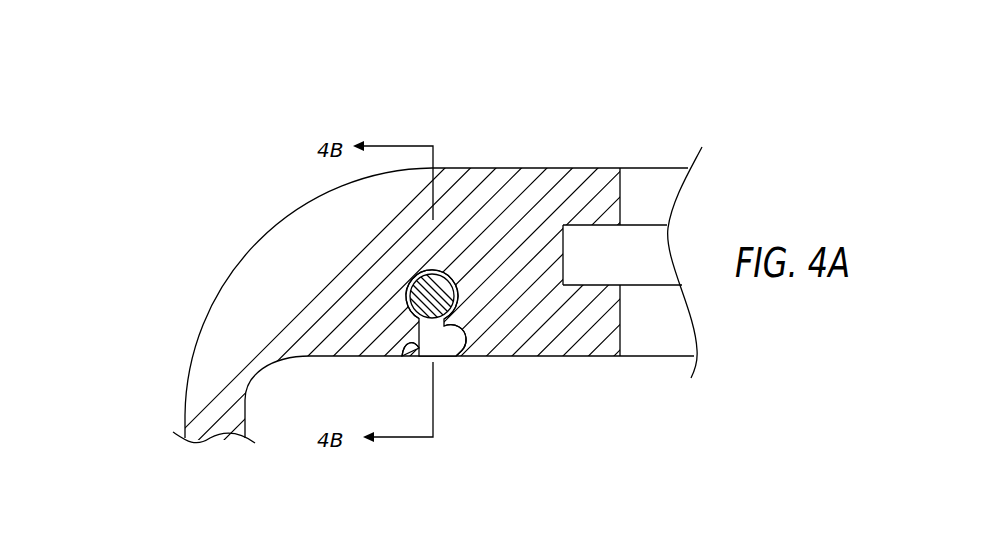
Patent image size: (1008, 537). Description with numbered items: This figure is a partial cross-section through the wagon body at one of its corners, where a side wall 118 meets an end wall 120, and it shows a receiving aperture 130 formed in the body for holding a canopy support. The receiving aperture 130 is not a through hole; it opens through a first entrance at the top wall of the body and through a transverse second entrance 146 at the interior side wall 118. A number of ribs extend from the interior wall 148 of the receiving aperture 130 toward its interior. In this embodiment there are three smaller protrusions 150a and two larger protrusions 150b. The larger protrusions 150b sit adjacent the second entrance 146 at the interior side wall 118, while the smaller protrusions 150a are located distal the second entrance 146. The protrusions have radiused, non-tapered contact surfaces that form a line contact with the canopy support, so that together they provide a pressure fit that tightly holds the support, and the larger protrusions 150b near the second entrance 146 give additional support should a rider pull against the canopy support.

The side wall 118 is at (600, 167).
The end wall 120 is at (185, 417).
The receiving aperture 130 is at (417, 272).
The second entrance 146 is at (443, 360).
The interior wall 148 is at (447, 276).
The smaller protrusions 150a is at (408, 297).
The larger protrusions 150b is at (418, 340).